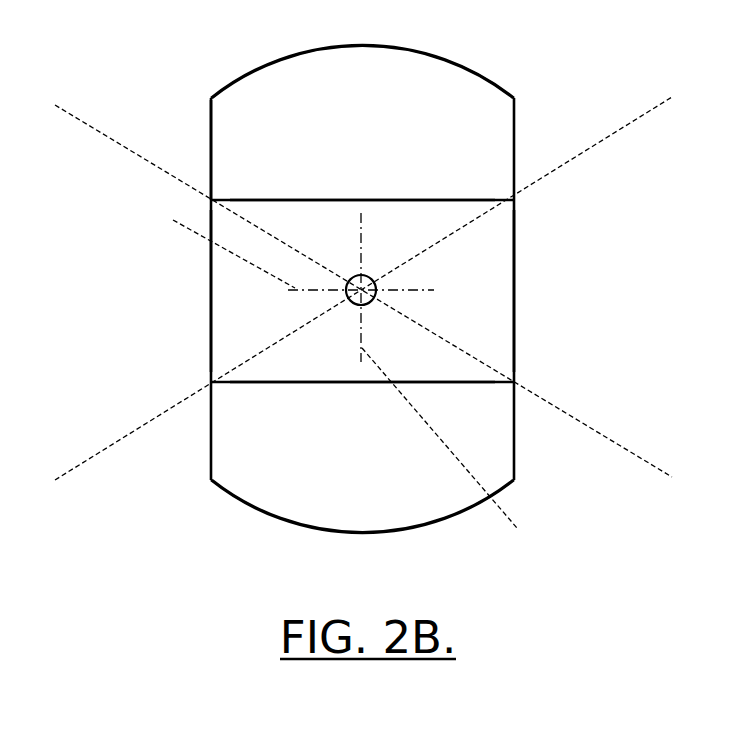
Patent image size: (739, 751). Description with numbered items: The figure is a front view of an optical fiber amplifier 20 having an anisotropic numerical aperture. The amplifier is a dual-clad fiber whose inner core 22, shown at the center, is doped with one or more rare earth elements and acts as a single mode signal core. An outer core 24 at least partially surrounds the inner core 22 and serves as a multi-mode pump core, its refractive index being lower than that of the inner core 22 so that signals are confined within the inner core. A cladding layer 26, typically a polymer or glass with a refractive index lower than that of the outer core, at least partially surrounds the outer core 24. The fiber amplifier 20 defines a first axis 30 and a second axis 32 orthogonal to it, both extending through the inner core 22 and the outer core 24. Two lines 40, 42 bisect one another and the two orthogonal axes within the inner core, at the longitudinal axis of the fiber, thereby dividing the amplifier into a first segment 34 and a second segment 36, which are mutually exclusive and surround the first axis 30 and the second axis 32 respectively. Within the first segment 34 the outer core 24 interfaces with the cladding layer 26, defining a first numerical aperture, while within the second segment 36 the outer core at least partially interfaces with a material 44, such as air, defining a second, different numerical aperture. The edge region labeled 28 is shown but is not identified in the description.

The optical fiber amplifier 20 is at (533, 93).
The inner core 22 is at (378, 285).
The outer core 24 is at (332, 211).
The cladding layer 26 is at (403, 113).
The side edge 28 is at (208, 112).
The first axis 30 is at (517, 528).
The second axis 32 is at (173, 220).
The first segment 34 is at (348, 164).
The second segment 36 is at (235, 301).
The line 40 is at (143, 425).
The line 42 is at (593, 428).
The material 44 is at (164, 303).